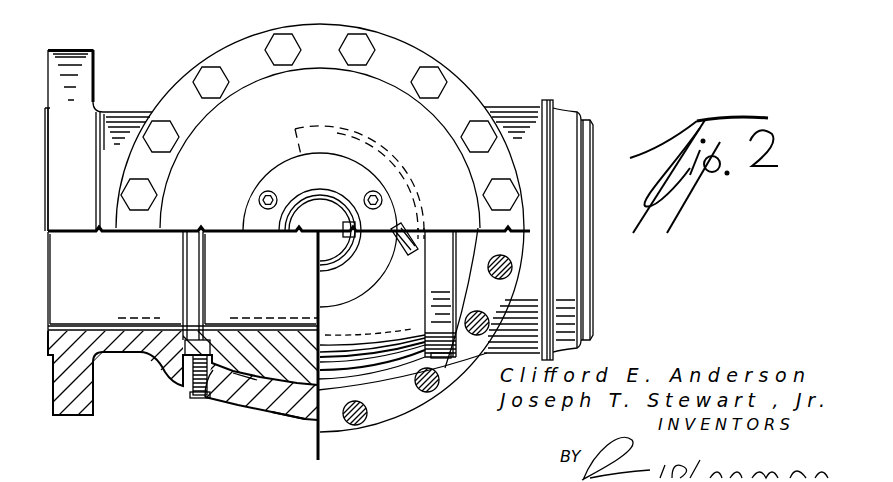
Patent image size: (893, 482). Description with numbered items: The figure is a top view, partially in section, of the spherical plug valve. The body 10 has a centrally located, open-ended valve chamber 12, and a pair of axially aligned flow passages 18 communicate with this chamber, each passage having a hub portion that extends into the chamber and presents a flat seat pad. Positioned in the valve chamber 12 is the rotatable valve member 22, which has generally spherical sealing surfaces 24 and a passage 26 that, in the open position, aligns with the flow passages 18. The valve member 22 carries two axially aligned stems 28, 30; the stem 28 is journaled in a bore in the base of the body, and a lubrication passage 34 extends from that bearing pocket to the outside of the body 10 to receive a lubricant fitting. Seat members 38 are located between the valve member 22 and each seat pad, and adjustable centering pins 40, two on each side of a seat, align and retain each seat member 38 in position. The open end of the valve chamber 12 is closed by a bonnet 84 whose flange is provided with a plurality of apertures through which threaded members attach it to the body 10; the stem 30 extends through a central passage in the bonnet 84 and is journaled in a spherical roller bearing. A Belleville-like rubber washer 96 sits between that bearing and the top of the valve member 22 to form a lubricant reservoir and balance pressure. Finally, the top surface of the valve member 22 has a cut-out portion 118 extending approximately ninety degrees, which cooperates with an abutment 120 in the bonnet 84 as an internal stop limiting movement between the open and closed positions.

The body 10 is at (600, 291).
The valve chamber 12 is at (258, 382).
The flow passage 18 is at (92, 277).
The rotatable valve member 22 is at (236, 375).
The spherical sealing surface 24 is at (296, 392).
The passage 26 is at (260, 277).
The stem 28 is at (469, 0).
The stem 30 is at (318, 208).
The passage 34 is at (320, 105).
The seat member 38 is at (183, 372).
The centering pin 40 is at (200, 398).
The bonnet 84 is at (320, 216).
The Belleville-like rubber washer 96 is at (284, 178).
The cut-out portion 118 is at (417, 252).
The abutment 120 is at (432, 230).